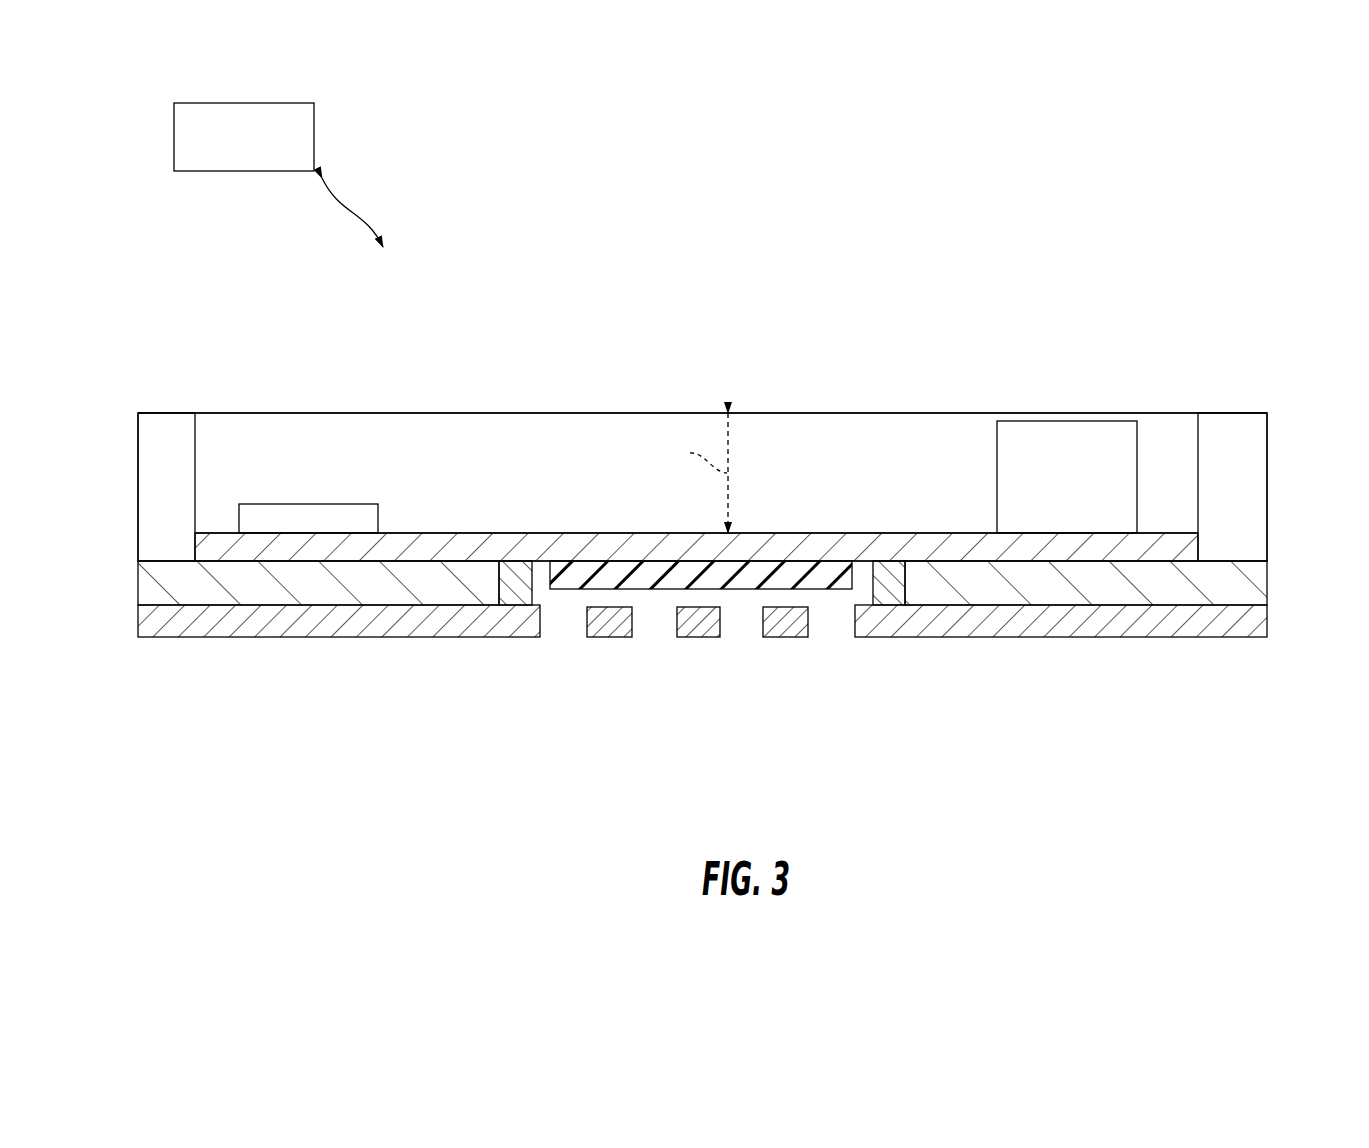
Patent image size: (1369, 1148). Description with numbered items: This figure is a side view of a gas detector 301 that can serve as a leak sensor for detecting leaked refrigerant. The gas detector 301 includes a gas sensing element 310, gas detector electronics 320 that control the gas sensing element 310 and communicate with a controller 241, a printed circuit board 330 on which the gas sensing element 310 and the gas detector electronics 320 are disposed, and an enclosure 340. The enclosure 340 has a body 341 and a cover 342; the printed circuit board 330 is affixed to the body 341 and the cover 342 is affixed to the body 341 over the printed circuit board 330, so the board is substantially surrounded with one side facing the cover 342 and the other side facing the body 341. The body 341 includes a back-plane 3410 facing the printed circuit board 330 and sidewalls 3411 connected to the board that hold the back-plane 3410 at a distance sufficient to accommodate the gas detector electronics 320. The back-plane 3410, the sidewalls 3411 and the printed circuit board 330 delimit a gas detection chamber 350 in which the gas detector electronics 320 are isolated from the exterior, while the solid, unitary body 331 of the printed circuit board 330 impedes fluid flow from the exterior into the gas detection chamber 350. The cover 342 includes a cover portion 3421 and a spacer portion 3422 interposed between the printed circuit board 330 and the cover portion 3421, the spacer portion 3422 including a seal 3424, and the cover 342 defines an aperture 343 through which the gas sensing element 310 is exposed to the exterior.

The controller 241 is at (262, 148).
The gas detector 301 is at (701, 537).
The gas sensing element 310 is at (568, 590).
The gas detector electronics 320 is at (283, 503).
The printed circuit board 330 is at (721, 458).
The solid, unitary body 331 is at (887, 548).
The enclosure 340 is at (701, 460).
The body 341 is at (138, 522).
The cover 342 is at (285, 622).
The aperture 343 is at (738, 638).
The gas detection chamber 350 is at (438, 487).
The back-plane 3410 is at (512, 413).
The sidewalls 3411 is at (1267, 463).
The cover portion 3421 is at (473, 622).
The spacer portion 3422 is at (1043, 582).
The seal 3424 is at (893, 590).